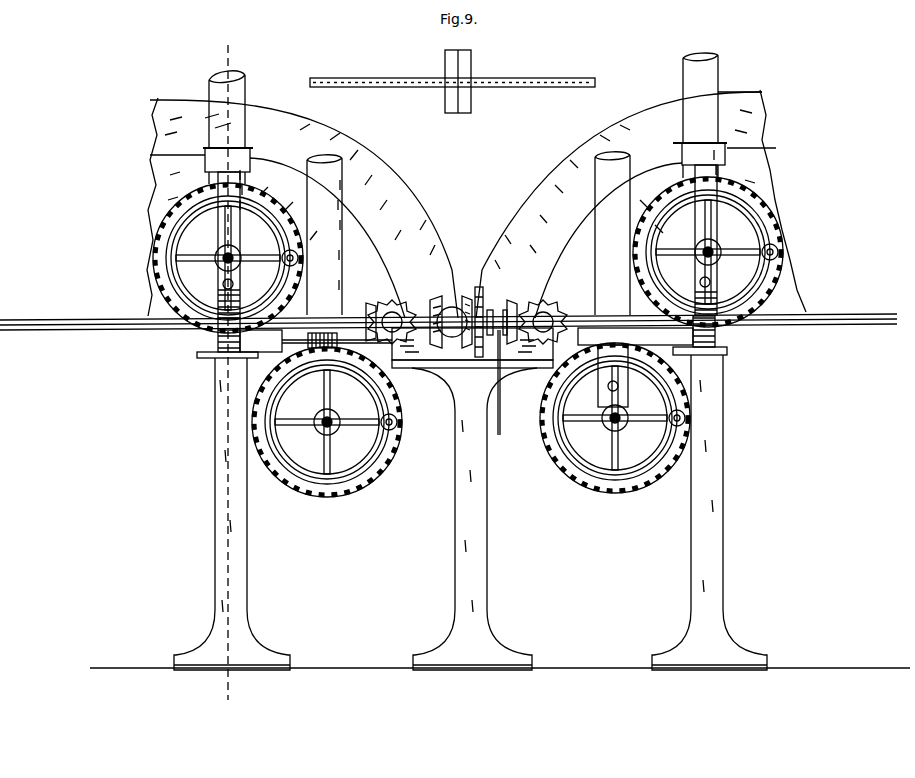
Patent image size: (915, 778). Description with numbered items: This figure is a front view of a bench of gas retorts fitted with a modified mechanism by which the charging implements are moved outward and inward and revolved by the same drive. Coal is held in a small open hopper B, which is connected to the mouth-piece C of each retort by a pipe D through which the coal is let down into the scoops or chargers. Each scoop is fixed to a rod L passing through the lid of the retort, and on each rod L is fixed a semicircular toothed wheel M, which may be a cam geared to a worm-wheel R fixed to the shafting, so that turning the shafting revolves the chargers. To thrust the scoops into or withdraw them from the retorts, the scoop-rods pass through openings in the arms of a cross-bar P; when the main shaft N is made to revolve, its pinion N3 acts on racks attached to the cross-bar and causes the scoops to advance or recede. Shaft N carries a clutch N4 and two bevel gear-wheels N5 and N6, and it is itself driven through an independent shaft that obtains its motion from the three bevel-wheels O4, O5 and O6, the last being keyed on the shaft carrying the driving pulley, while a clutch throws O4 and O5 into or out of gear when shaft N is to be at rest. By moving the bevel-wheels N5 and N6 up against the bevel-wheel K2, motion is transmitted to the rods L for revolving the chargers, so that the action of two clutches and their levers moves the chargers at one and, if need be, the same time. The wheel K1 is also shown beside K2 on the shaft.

The pipe D is at (226, 104).
The mouth-piece C is at (465, 157).
The semicircular toothed wheel M is at (160, 244).
The rod L is at (240, 256).
The cross-bar P is at (466, 361).
The shaft N is at (98, 326).
The pinion N3 is at (740, 340).
The clutch N4 is at (492, 308).
The bevel gear-wheel N5 is at (512, 300).
The bevel gear-wheel N6 is at (370, 305).
The bevel-wheel O4 is at (436, 298).
The bevel-wheel O5 is at (470, 296).
The bevel-wheel O6 is at (472, 348).
The ratchet wheel K1 is at (552, 312).
The bevel-wheel K2 is at (392, 310).
The worm-wheel R is at (360, 344).
The hopper B is at (372, 343).